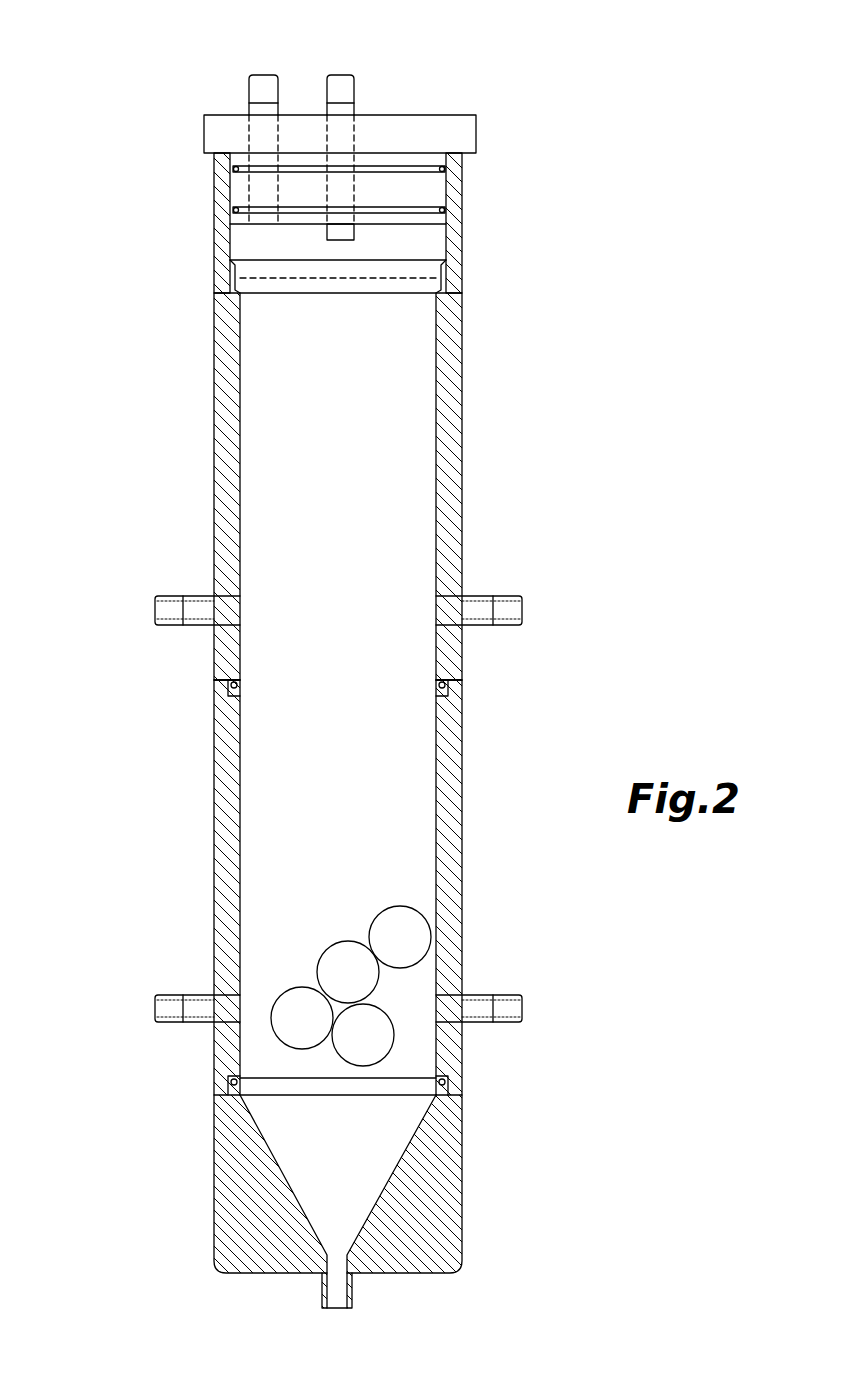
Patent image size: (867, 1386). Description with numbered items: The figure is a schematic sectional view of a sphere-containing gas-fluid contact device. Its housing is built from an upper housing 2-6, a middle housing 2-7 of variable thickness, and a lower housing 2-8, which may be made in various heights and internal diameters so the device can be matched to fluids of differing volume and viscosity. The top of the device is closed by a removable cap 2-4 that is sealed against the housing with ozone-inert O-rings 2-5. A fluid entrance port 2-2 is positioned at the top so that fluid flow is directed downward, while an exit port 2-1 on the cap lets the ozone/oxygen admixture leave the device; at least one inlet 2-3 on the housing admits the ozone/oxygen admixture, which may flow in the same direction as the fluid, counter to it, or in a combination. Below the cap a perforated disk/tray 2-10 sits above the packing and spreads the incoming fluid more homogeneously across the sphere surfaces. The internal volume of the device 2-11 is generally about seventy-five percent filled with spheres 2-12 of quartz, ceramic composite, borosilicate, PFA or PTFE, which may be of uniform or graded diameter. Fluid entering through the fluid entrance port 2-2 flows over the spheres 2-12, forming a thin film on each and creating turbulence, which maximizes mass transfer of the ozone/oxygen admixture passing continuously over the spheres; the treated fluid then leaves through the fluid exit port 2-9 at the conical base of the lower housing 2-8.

The exit port 2-1 is at (258, 88).
The fluid entrance port 2-2 is at (337, 80).
The inlet 2-3 is at (187, 597).
The removable cap 2-4 is at (378, 183).
The ozone-inert O-rings 2-5 is at (232, 167).
The upper housing 2-6 is at (220, 463).
The middle housing 2-7 is at (217, 818).
The lower housing 2-8 is at (220, 1150).
The fluid exit port 2-9 is at (320, 1295).
The disk/tray 2-10 is at (433, 273).
The internal volume of the device 2-11 is at (285, 388).
The spheres 2-12 is at (420, 935).